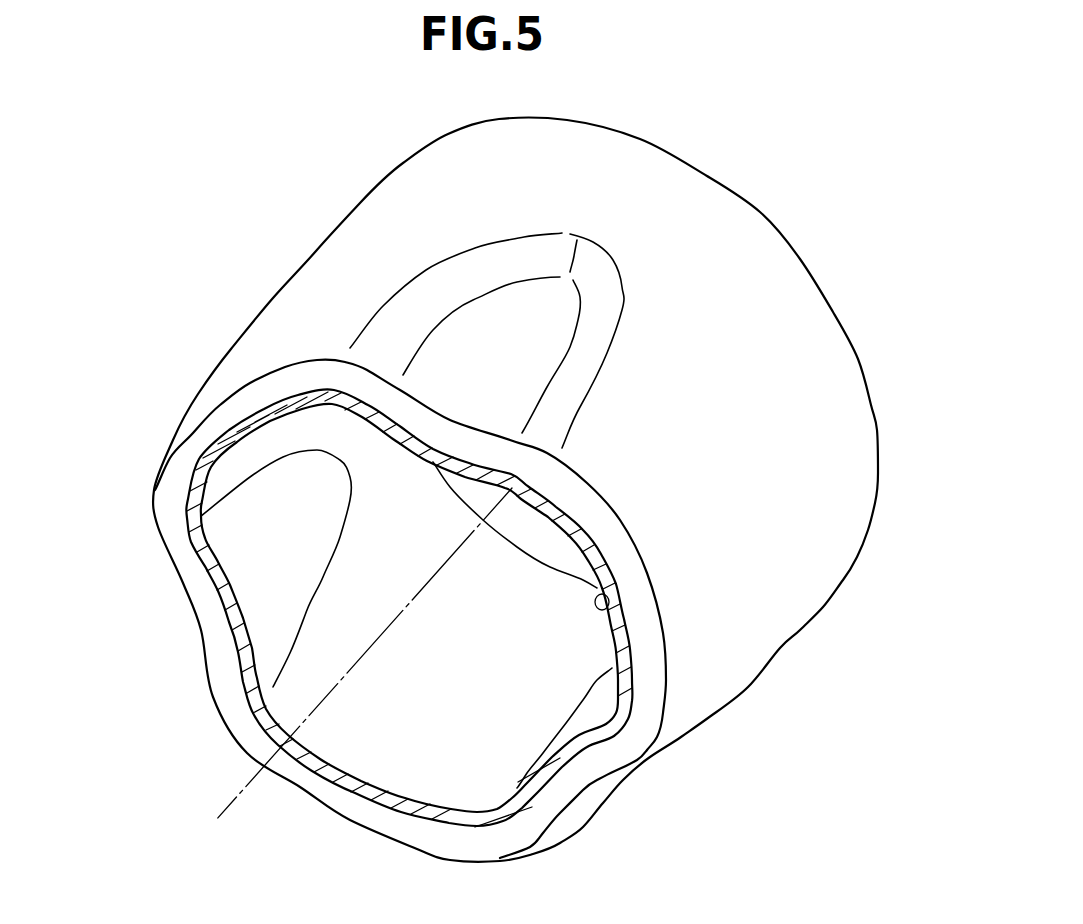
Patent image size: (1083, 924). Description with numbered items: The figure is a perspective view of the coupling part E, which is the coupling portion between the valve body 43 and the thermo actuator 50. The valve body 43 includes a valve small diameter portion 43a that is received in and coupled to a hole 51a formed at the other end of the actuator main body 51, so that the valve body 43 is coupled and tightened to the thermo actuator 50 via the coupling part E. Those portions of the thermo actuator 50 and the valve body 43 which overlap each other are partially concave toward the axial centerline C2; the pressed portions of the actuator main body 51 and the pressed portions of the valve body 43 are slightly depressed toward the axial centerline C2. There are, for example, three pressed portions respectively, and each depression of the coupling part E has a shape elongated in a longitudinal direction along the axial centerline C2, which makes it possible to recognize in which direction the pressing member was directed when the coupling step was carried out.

The axial centerline C2 is at (760, 208).
The thermo actuator 50 is at (410, 547).
The actuator main body 51 is at (338, 268).
The valve body 43 is at (351, 608).
The valve small diameter portion 43a is at (233, 627).
The hole 51a is at (613, 593).
The coupling part E is at (490, 389).